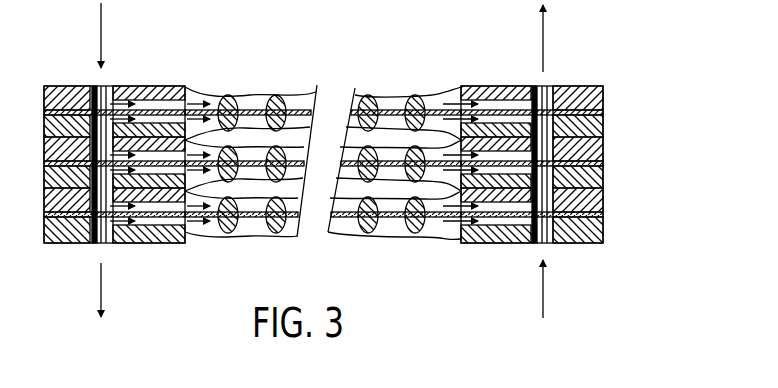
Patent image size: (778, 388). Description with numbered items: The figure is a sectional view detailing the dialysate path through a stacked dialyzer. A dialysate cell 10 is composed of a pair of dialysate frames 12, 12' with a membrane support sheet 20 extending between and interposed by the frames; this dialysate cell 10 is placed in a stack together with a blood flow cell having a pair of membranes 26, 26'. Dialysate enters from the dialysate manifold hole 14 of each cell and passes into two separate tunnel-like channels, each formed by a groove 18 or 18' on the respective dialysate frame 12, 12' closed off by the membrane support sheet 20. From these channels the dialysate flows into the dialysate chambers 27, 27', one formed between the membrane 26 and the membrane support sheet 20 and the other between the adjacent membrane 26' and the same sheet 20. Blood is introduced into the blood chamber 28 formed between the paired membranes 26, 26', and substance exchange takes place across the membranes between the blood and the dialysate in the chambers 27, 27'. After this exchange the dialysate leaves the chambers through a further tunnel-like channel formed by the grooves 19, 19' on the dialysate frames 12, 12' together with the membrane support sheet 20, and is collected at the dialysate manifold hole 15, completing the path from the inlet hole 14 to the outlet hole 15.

The dialysate cell 10 is at (660, 78).
The dialysate frame 12 is at (600, 95).
The dialysate frame 12' is at (606, 137).
The dialysate manifold hole 14 is at (98, 88).
The dialysate manifold hole 15 is at (547, 90).
The groove 18 is at (147, 66).
The groove 18' is at (149, 86).
The groove 19 is at (496, 68).
The groove 19' is at (498, 94).
The membrane support sheet 20 is at (597, 112).
The membrane 26 is at (255, 80).
The membrane 26' is at (323, 145).
The dialysate chamber 27 is at (381, 80).
The dialysate chamber 27' is at (422, 83).
The blood chamber 28 is at (242, 140).